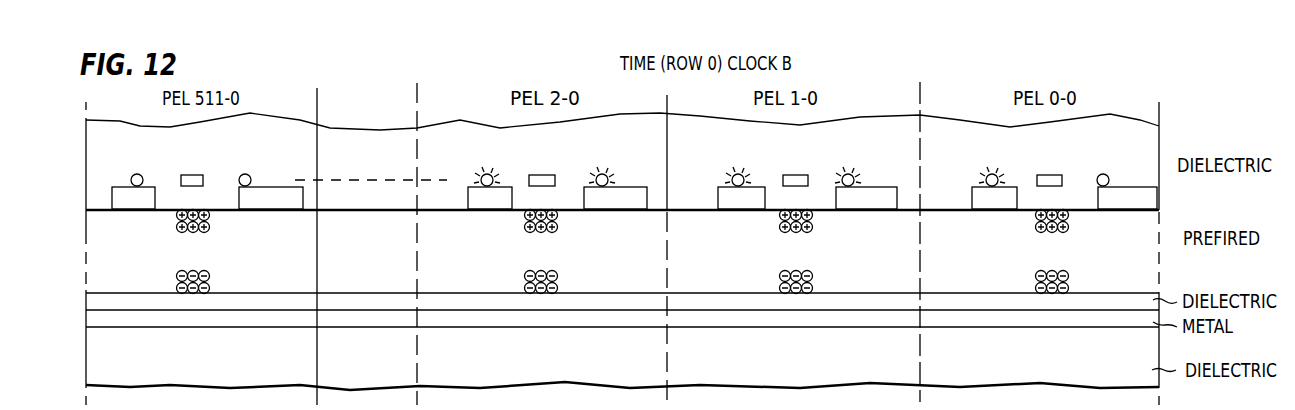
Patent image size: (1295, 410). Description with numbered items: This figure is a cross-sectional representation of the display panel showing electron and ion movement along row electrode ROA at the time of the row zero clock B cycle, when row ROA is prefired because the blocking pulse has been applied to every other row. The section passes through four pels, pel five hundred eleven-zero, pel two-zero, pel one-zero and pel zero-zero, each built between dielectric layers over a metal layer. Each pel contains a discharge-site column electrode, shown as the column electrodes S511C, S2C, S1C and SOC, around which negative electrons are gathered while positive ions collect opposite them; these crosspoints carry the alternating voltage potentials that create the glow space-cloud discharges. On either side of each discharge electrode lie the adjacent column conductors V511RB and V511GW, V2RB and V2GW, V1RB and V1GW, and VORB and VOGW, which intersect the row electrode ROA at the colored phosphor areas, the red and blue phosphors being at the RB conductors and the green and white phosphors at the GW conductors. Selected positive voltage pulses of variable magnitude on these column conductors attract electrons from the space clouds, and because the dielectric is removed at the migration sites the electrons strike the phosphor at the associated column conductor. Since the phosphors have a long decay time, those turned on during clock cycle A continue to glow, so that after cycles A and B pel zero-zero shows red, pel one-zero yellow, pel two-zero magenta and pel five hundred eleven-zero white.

The column conductor V511RB is at (146, 156).
The column electrode S511C is at (215, 156).
The column conductor V511GW is at (252, 175).
The column conductor V2RB is at (486, 173).
The column electrode S2C is at (560, 156).
The column conductor V2GW is at (601, 174).
The column conductor V1RB is at (737, 173).
The column electrode S1C is at (812, 156).
The column conductor V1GW is at (851, 174).
The column conductor VORB is at (992, 173).
The column electrode SOC is at (1067, 156).
The column conductor VOGW is at (1102, 174).
The row electrode ROA is at (1135, 318).